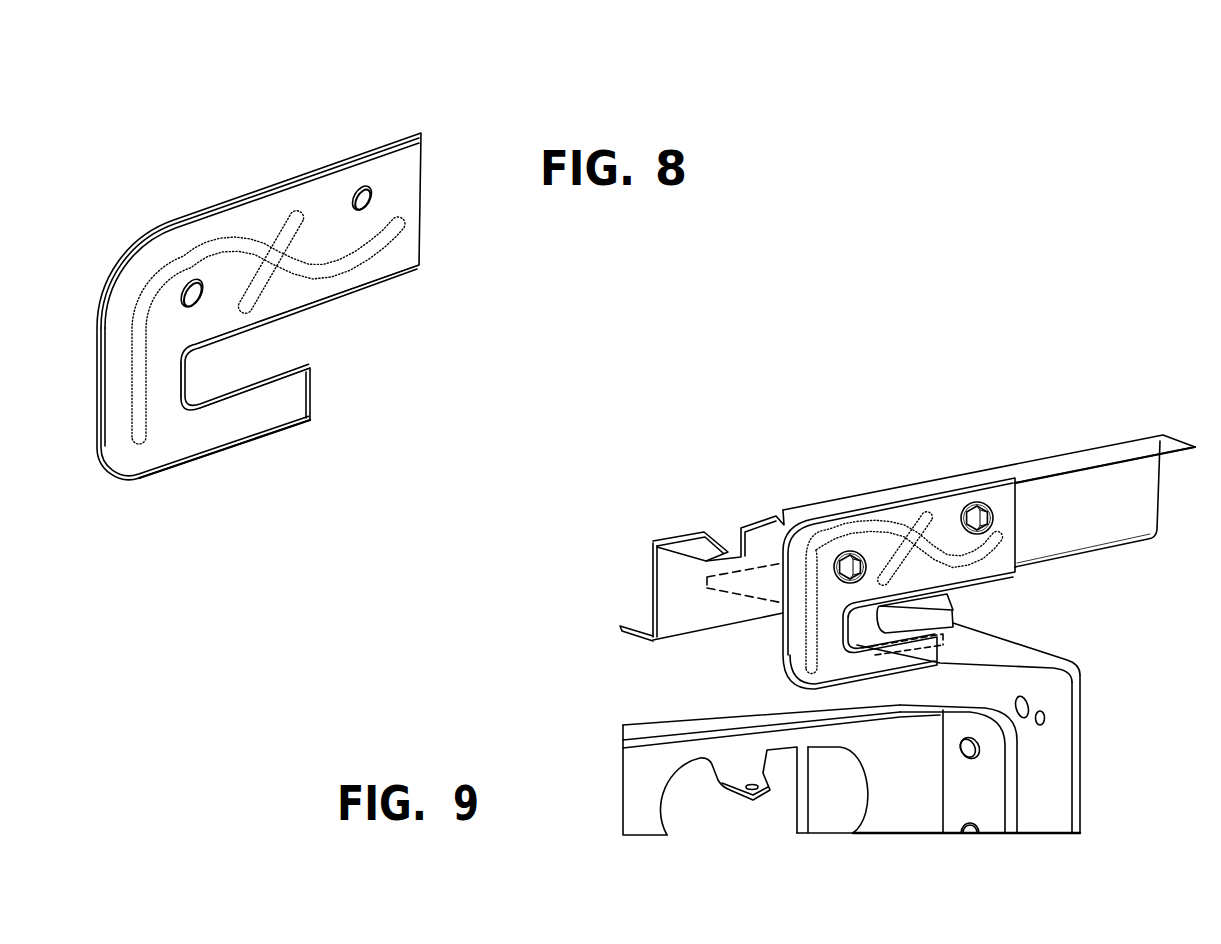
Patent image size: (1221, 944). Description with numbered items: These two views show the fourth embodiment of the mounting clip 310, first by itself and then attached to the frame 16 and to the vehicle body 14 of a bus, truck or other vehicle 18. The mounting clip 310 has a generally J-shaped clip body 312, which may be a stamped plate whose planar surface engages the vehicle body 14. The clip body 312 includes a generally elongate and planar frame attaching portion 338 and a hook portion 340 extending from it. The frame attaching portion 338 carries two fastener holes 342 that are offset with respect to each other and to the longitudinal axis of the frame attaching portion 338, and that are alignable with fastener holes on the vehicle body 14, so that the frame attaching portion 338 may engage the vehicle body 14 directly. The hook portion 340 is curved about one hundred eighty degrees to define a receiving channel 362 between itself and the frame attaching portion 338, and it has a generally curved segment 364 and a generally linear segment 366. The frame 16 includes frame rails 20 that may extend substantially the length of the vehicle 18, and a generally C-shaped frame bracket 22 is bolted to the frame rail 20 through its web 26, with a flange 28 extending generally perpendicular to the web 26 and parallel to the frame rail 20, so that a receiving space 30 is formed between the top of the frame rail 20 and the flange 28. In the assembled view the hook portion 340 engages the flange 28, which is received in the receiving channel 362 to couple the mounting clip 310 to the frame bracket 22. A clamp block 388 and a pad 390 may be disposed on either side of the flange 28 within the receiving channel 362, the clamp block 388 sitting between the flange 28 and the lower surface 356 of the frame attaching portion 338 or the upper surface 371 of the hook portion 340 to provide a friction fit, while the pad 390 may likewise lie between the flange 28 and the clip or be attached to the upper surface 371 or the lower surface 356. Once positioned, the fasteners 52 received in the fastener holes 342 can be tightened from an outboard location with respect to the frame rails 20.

In FIG. 9, the vehicle body 14 is at (1155, 442).
In FIG. 9, the frame 16 is at (637, 834).
In FIG. 9, the vehicle 18 is at (533, 752).
In FIG. 9, the frame rail 20 is at (637, 737).
In FIG. 9, the frame bracket 22 is at (1080, 800).
In FIG. 9, the web 26 is at (1037, 763).
In FIG. 9, the flange 28 is at (1027, 657).
In FIG. 9, the receiving space 30 is at (1027, 703).
In FIG. 9, the fastener 52 is at (847, 552).
In FIG. 8, the mounting clip 310 is at (489, 321).
In FIG. 9, the mounting clip 310 is at (1018, 530).
In FIG. 8, the clip body 312 is at (241, 197).
In FIG. 8, the frame attaching portion 338 is at (313, 175).
In FIG. 9, the frame attaching portion 338 is at (950, 603).
In FIG. 8, the hook portion 340 is at (96, 326).
In FIG. 9, the hook portion 340 is at (785, 636).
In FIG. 8, the fastener hole 342 is at (383, 146).
In FIG. 8, the lower surface 356 is at (325, 303).
In FIG. 9, the lower surface 356 is at (998, 583).
In FIG. 8, the receiving channel 362 is at (300, 336).
In FIG. 8, the curved segment 364 is at (143, 391).
In FIG. 8, the linear segment 366 is at (253, 428).
In FIG. 8, the upper surface 371 is at (296, 360).
In FIG. 9, the clamp block 388 is at (903, 515).
In FIG. 9, the pad 390 is at (810, 689).